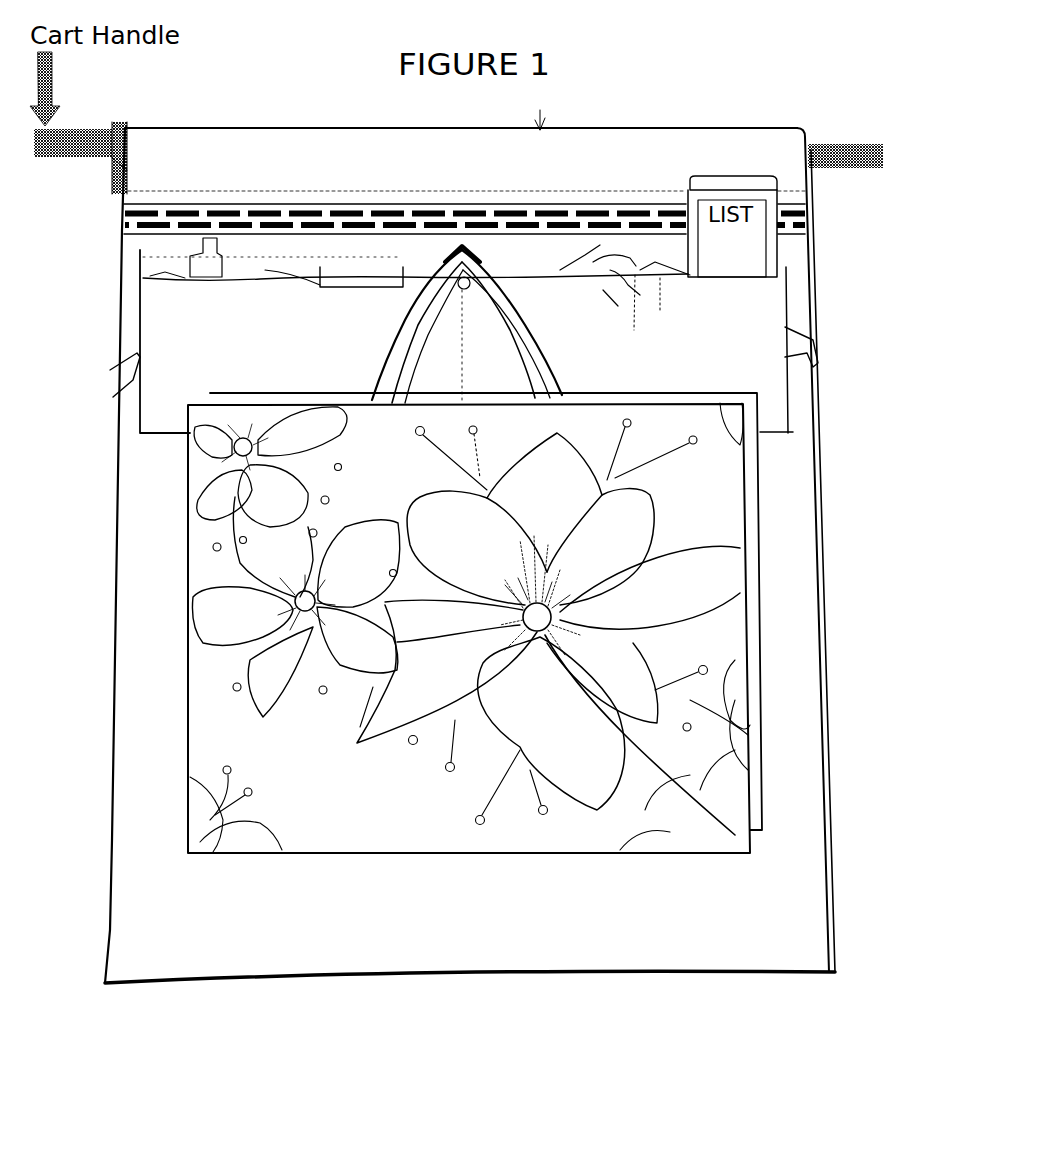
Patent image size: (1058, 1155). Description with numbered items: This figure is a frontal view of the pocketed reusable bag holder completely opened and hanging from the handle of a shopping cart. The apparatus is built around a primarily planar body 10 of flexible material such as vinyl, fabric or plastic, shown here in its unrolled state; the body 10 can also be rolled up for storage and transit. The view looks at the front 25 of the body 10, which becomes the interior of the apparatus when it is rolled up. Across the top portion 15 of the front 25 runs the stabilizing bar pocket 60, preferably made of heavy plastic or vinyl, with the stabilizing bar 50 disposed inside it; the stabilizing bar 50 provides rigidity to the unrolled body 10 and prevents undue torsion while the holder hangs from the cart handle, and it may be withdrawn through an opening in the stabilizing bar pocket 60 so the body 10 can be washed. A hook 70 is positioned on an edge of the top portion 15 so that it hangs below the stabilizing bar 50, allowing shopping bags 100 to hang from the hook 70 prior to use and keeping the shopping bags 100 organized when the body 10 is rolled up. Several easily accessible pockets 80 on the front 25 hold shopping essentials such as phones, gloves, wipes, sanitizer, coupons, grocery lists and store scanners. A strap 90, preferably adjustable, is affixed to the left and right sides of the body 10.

The body 10 is at (772, 893).
The top portion 15 is at (153, 170).
The front 25 is at (322, 158).
The stabilizing bar 50 is at (147, 220).
The stabilizing bar pocket 60 is at (800, 237).
The hook 70 is at (462, 252).
The pockets 80 is at (153, 283).
The strap 90 is at (803, 348).
The shopping bags 100 is at (207, 576).